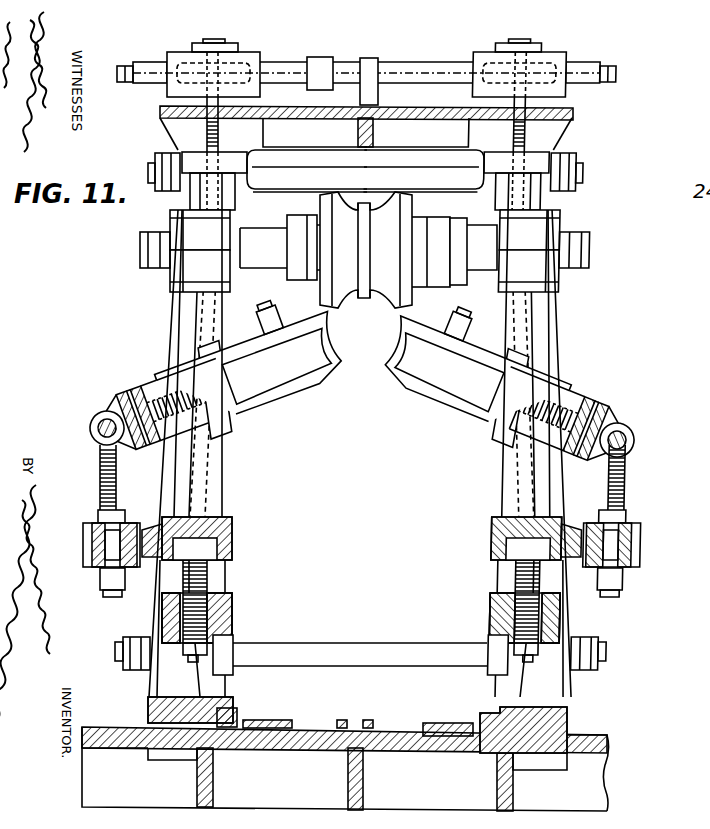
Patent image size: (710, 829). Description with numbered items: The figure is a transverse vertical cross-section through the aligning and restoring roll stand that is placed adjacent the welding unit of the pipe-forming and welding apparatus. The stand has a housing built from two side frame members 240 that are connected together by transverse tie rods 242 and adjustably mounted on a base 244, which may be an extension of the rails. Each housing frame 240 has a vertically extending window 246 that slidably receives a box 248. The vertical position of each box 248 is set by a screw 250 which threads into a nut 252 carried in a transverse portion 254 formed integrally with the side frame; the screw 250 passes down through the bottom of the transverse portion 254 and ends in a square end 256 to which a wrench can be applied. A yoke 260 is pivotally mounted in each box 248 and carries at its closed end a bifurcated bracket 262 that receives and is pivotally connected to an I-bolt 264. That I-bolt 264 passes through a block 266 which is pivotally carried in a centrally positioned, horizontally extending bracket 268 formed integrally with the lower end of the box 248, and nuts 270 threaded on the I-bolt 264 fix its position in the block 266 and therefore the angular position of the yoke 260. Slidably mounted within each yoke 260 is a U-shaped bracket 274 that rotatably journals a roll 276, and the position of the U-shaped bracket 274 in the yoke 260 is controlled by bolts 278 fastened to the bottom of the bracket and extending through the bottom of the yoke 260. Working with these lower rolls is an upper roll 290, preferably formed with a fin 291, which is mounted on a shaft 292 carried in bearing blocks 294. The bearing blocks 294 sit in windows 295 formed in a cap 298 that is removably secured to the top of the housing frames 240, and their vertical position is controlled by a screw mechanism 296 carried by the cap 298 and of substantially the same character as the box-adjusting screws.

The side frame member 240 is at (500, 707).
The transverse tie rod 242 is at (583, 178).
The base 244 is at (608, 743).
The vertically extending window 246 is at (502, 480).
The box 248 is at (487, 527).
The screw 250 is at (497, 578).
The nut 252 is at (492, 603).
The transverse portion 254 is at (490, 622).
The square end 256 is at (210, 667).
The yoke 260 is at (557, 390).
The bifurcated bracket 262 is at (613, 417).
The I-bolt 264 is at (627, 437).
The block 266 is at (630, 548).
The horizontally extending bracket 268 is at (633, 537).
The nut 270 is at (618, 513).
The U-shaped bracket 274 is at (520, 362).
The roll 276 is at (397, 363).
The bolt 278 is at (560, 407).
The upper roll 290 is at (327, 207).
The fin 291 is at (363, 242).
The shaft 292 is at (475, 238).
The bearing block 294 is at (560, 226).
The window 295 is at (558, 300).
The screw mechanism 296 is at (258, 55).
The cap 298 is at (575, 117).